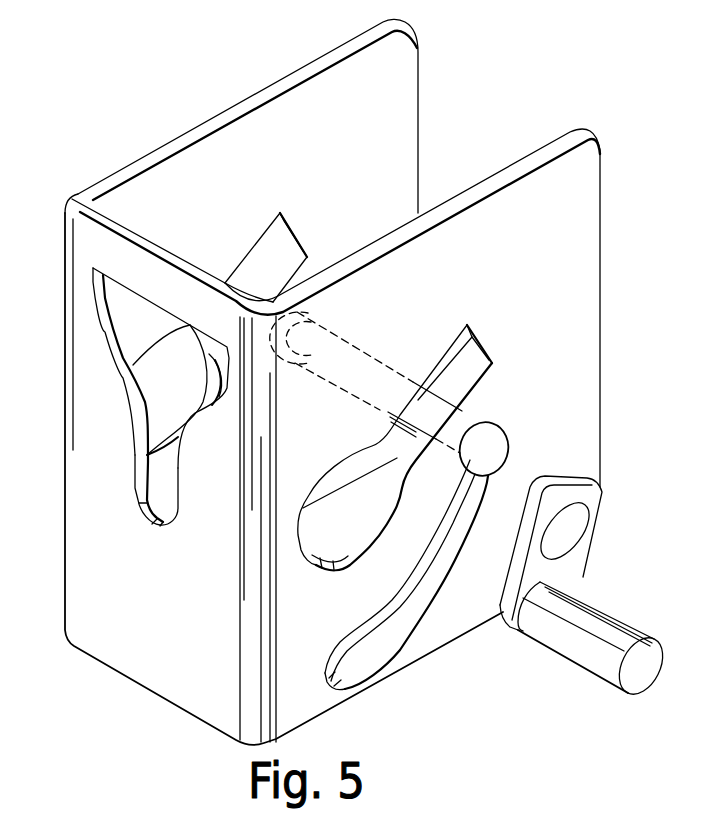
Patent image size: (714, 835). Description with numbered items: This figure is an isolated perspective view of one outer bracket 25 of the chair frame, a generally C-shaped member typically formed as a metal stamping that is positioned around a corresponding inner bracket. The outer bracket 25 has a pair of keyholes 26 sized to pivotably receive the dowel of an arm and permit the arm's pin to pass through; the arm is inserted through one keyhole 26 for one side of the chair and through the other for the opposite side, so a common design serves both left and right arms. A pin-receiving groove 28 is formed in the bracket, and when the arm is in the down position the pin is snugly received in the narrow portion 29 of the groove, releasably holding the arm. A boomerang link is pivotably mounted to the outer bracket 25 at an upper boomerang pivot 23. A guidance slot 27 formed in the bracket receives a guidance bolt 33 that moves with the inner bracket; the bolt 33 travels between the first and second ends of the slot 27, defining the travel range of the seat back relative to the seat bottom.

The upper boomerang pivot 23 is at (648, 672).
The outer bracket 25 is at (490, 216).
The keyhole 26 is at (263, 238).
The guidance slot 27 is at (388, 637).
The pin-receiving groove 28 is at (127, 308).
The narrow portion 29 is at (170, 470).
The guidance bolt 33 is at (495, 437).